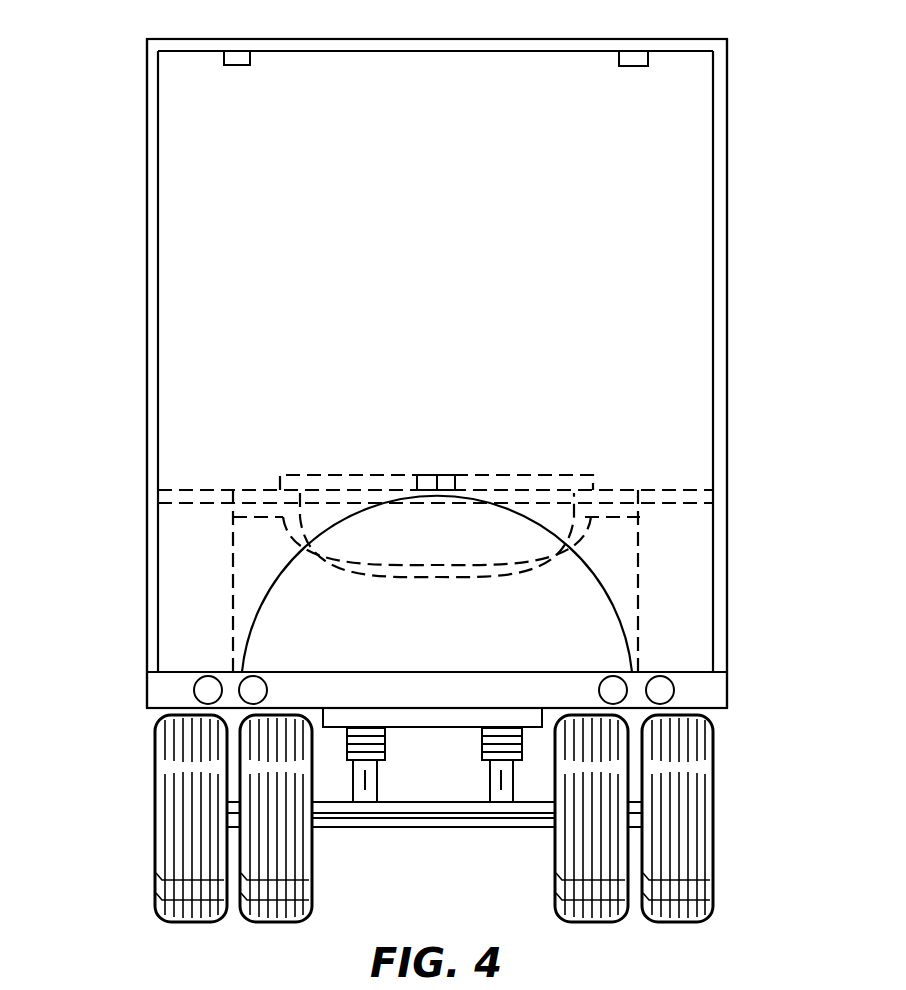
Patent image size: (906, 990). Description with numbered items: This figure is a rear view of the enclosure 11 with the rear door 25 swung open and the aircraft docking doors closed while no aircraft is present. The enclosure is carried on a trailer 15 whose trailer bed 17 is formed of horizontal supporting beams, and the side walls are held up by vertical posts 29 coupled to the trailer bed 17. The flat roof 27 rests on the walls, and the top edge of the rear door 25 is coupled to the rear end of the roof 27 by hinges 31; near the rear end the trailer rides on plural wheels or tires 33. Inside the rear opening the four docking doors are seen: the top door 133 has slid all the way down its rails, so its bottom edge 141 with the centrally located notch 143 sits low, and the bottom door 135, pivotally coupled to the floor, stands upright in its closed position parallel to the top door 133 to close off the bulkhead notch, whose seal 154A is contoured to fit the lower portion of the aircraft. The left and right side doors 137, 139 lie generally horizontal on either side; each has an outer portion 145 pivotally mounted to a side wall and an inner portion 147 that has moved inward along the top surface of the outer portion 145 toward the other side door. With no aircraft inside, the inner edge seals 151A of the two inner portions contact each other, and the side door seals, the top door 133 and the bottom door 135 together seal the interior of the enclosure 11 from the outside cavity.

The enclosure 11 is at (128, 106).
The trailer 15 is at (147, 135).
The trailer bed 17 is at (147, 688).
The rear door 25 is at (493, 40).
The roof 27 is at (275, 38).
The vertical posts 29 is at (148, 213).
The hinges 31 is at (233, 53).
The wheels or tires 33 is at (156, 833).
The top door 133 is at (185, 405).
The bottom door 135 is at (397, 508).
The left side door 137 is at (187, 504).
The right side door 139 is at (672, 503).
The bottom edge 141 is at (700, 673).
The notch 143 is at (280, 586).
The outer portion 145 is at (677, 490).
The inner portion 147 is at (533, 476).
The inner edge seals 151A is at (450, 475).
The notch seal 154A is at (577, 521).